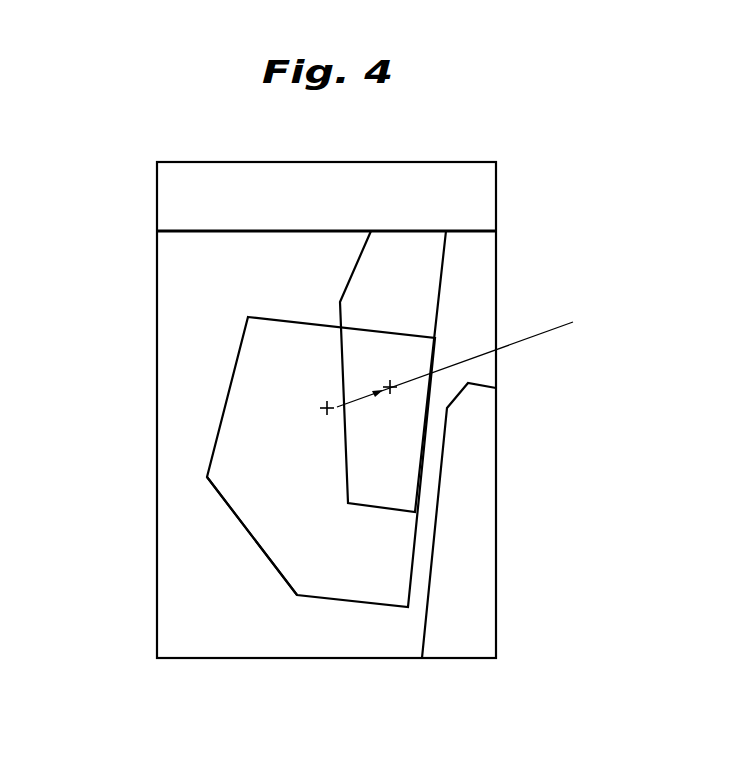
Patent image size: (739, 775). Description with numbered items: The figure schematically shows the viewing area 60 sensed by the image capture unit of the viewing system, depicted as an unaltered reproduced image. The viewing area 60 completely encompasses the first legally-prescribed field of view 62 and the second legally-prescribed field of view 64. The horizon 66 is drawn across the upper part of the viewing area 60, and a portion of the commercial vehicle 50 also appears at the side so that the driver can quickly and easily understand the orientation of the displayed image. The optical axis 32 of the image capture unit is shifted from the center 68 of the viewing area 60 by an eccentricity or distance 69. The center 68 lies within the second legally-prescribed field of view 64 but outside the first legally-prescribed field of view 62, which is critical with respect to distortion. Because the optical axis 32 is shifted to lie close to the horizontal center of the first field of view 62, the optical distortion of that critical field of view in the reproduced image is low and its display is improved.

The viewing area 60 is at (497, 198).
The horizon 66 is at (198, 231).
The first legally-prescribed field of view 62 is at (443, 281).
The center of the viewing area 68 is at (321, 406).
The second legally-prescribed field of view 64 is at (225, 505).
The eccentricity or distance 69 is at (360, 400).
The optical axis 32 is at (470, 353).
The commercial vehicle 50 is at (478, 497).